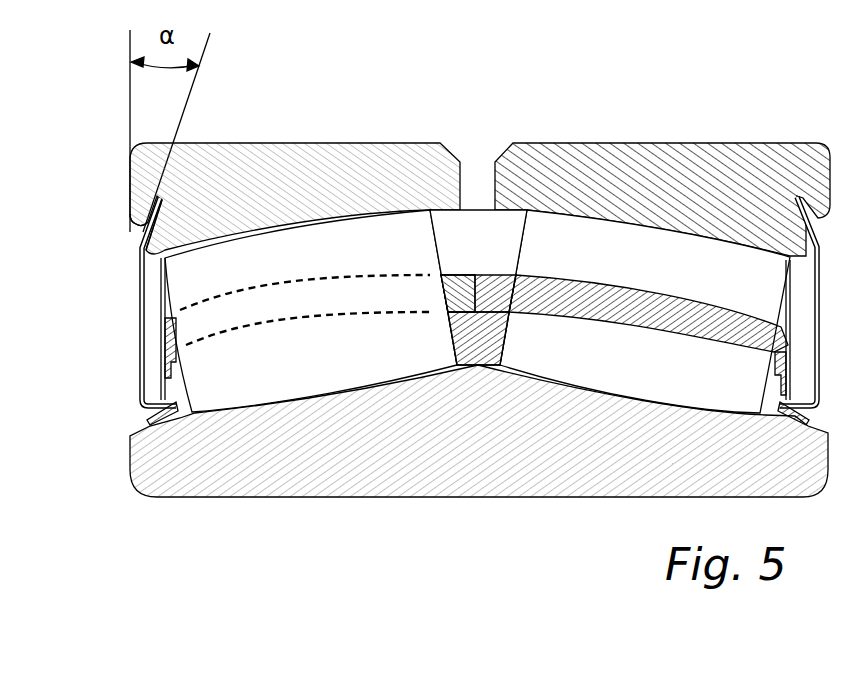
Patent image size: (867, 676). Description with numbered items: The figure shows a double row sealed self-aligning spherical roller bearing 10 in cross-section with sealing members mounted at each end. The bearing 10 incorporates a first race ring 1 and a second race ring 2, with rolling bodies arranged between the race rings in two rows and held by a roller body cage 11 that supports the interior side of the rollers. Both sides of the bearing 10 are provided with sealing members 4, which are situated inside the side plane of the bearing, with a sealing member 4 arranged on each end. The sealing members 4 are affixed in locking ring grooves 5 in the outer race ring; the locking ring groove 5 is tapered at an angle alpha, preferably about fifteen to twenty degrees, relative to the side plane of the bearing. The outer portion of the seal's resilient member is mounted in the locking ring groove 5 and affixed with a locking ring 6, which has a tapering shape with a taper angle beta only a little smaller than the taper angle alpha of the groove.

The first race ring 1 is at (130, 452).
The second race ring 2 is at (130, 157).
The sealing member 4 is at (140, 322).
The locking ring groove 5 is at (152, 193).
The locking ring 6 is at (138, 228).
The spherical roller bearing 10 is at (494, 116).
The roller body cage 11 is at (165, 368).